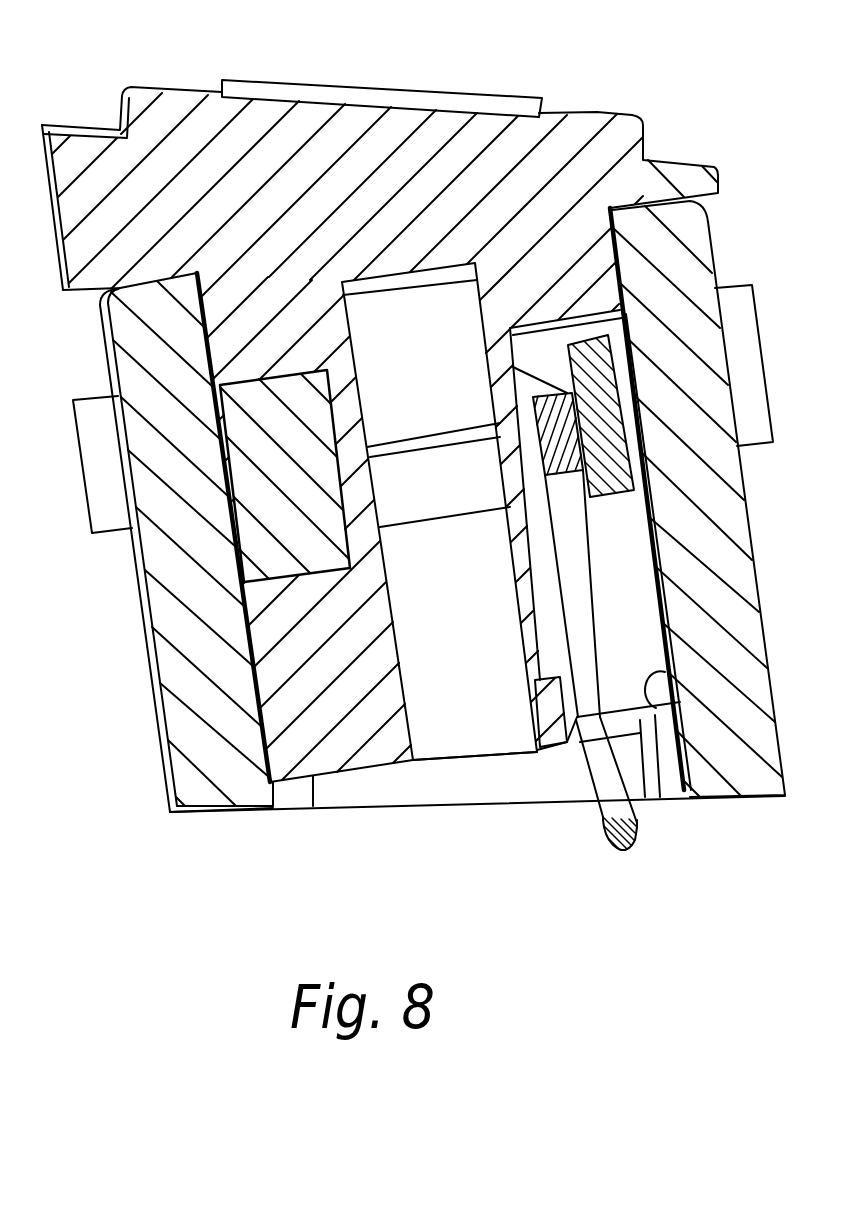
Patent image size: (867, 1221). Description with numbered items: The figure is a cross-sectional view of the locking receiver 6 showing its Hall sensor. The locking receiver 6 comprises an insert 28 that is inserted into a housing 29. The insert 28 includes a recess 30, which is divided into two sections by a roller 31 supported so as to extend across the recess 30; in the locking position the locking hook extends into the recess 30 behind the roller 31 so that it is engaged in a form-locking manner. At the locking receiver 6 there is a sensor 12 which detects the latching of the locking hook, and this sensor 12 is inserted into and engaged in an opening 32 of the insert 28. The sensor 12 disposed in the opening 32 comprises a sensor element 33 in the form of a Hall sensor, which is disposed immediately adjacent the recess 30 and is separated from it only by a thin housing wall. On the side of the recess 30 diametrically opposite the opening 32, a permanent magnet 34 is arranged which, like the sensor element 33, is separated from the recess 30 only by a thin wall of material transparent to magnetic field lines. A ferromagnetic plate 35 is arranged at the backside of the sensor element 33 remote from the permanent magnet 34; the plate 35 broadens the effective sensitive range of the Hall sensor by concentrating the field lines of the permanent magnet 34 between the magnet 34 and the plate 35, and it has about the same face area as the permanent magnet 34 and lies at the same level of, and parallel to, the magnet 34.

The locking receiver 6 is at (260, 66).
The sensor 12 is at (577, 735).
The insert 28 is at (330, 757).
The housing 29 is at (168, 655).
The recess 30 is at (446, 725).
The roller 31 is at (430, 503).
The opening 32 is at (653, 727).
The sensor element 33 is at (582, 490).
The permanent magnet 34 is at (257, 540).
The ferromagnetic plate 35 is at (625, 505).